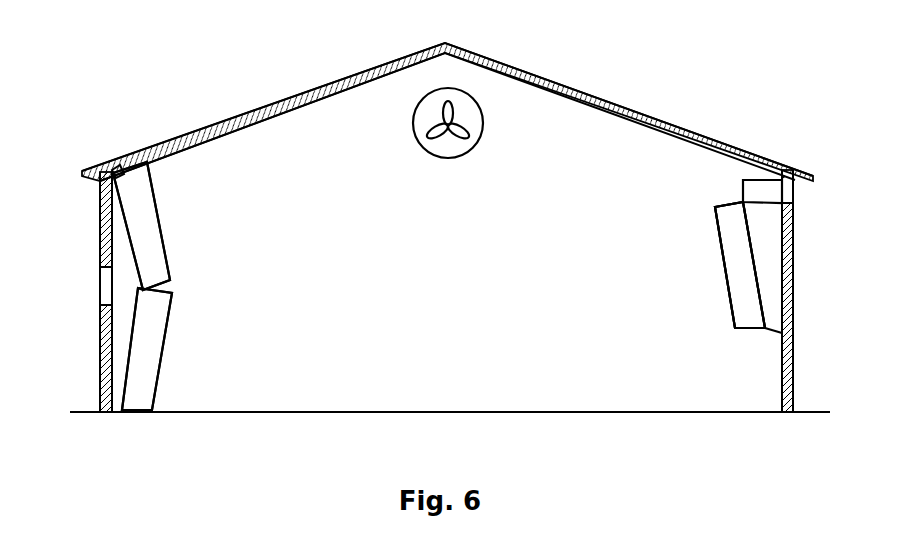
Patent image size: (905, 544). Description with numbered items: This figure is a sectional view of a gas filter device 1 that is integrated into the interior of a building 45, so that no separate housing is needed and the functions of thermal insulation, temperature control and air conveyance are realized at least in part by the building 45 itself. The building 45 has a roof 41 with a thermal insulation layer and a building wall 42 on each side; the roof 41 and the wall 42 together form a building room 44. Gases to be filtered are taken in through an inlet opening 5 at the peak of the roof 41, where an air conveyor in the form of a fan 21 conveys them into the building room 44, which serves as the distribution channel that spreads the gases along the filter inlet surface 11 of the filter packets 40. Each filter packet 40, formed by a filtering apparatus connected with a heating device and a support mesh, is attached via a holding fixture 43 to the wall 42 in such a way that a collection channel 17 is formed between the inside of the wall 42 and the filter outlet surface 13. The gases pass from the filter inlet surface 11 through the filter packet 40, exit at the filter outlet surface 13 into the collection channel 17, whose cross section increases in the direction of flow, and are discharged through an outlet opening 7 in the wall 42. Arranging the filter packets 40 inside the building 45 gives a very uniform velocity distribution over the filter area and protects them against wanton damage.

The gas filter device 1 is at (207, 285).
The inlet opening 5 is at (484, 84).
The outlet opening 7 is at (107, 292).
The filter inlet surface 11 is at (160, 368).
The filter outlet surface 13 is at (135, 258).
The collection channel 17 is at (127, 312).
The fan 21 is at (448, 120).
The filter packet 40 is at (150, 230).
The roof 41 is at (283, 105).
The building wall 42 is at (106, 195).
The holding fixture 43 is at (135, 166).
The building room 44 is at (250, 180).
The building 45 is at (331, 83).